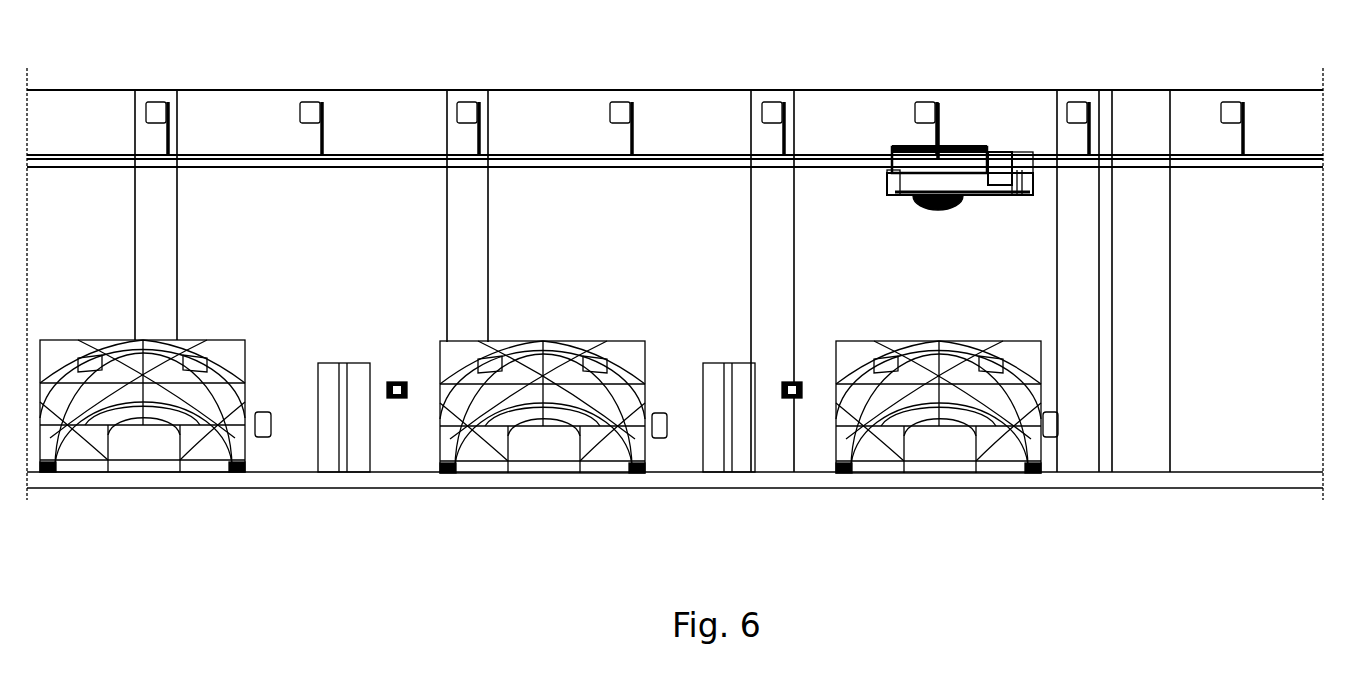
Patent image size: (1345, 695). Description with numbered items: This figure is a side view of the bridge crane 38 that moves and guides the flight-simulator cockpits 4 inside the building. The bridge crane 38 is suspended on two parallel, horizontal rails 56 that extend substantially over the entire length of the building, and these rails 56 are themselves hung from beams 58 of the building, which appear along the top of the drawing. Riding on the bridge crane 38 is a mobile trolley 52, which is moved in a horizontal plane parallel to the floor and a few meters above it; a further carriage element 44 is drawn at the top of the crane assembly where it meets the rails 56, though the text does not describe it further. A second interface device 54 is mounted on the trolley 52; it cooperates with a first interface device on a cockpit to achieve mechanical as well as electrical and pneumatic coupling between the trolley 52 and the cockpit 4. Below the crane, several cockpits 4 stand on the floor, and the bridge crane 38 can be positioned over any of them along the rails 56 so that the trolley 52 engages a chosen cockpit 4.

The airplane cockpit 4 is at (185, 353).
The bridge crane 38 is at (942, 162).
The carriage drive / upper beam 44 is at (960, 138).
The mobile trolley 52 is at (1000, 150).
The second interface device 54 is at (927, 213).
The rails 56 is at (272, 168).
The beams 58 is at (305, 117).